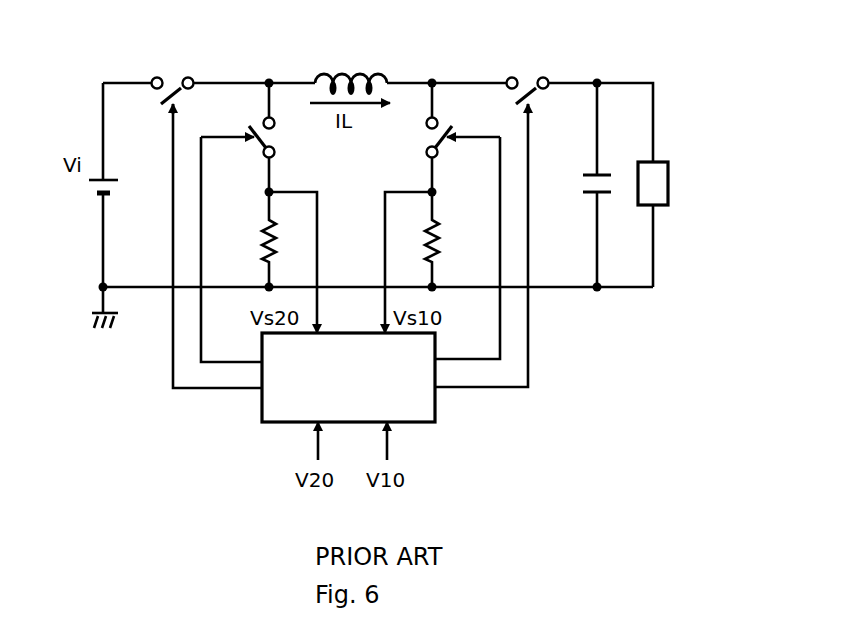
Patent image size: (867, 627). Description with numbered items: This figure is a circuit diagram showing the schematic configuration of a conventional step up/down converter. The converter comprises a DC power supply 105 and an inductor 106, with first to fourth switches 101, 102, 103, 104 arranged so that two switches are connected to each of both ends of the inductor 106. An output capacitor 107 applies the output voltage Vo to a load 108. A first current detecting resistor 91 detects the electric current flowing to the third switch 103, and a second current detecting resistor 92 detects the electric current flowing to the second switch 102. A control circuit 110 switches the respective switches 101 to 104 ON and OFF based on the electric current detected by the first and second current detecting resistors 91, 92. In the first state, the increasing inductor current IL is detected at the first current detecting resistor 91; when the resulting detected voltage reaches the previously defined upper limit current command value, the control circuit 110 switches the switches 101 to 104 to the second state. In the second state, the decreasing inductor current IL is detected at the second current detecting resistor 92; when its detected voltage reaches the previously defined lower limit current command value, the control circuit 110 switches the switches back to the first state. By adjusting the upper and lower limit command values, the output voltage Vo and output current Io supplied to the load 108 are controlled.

The first switch 101 is at (170, 78).
The second switch 102 is at (279, 147).
The third switch 103 is at (422, 147).
The fourth switch 104 is at (527, 78).
The DC power supply 105 is at (92, 188).
The inductor 106 is at (340, 70).
The output capacitor 107 is at (580, 183).
The load 108 is at (668, 182).
The control circuit 110 is at (435, 400).
The first current detecting resistor 91 is at (440, 238).
The second current detecting resistor 92 is at (262, 236).